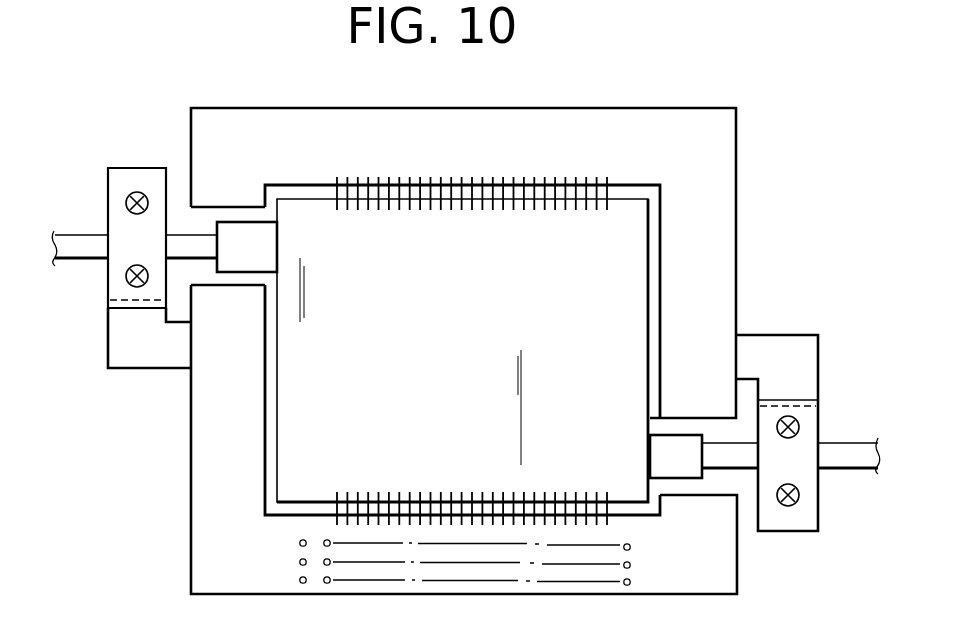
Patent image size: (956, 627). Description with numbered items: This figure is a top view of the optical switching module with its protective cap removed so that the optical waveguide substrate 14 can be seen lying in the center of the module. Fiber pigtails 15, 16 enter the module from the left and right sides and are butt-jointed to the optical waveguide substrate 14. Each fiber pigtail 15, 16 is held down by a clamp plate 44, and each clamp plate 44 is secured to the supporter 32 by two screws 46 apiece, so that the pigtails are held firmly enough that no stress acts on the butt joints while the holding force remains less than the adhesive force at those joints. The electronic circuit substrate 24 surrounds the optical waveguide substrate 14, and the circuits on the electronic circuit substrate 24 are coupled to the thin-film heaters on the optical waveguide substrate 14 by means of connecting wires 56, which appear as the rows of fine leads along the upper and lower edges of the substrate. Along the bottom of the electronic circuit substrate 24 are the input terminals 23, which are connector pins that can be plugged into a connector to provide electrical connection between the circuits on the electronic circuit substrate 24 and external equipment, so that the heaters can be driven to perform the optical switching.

The optical waveguide substrate 14 is at (640, 253).
The fiber pigtail 15 is at (70, 252).
The fiber pigtail 16 is at (855, 452).
The input terminals 23 is at (298, 543).
The electronic circuit substrate 24 is at (737, 582).
The supporter 32 is at (116, 352).
The clamp plates 44 is at (115, 220).
The screws 46 is at (126, 203).
The connecting wires 56 is at (590, 495).